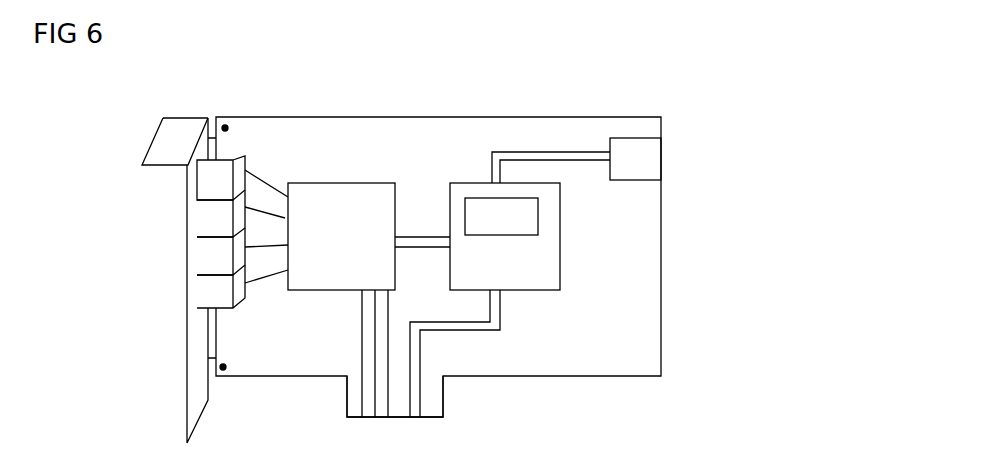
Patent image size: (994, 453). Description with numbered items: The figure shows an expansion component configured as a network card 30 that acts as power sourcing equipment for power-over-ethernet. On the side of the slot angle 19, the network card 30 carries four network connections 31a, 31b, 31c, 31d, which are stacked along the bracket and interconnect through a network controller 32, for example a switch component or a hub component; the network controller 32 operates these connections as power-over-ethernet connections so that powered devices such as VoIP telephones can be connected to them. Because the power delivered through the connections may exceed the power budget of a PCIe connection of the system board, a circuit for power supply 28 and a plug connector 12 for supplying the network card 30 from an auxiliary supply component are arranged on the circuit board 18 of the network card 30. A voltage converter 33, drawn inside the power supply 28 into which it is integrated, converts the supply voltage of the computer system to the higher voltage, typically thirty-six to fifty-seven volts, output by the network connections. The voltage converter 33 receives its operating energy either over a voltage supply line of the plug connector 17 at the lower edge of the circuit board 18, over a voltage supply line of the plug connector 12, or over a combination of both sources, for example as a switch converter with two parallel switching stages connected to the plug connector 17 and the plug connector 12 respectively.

The network card 30 is at (737, 72).
The circuit board 18 is at (622, 365).
The slot angle 19 is at (172, 132).
The network connection 31a is at (230, 155).
The network connection 31b is at (200, 218).
The network connection 31c is at (200, 258).
The network connection 31d is at (200, 292).
The network controller 32 is at (369, 300).
The power supply 28 is at (560, 283).
The voltage converter 33 is at (501, 216).
The plug connector 12 is at (630, 180).
The plug connector 17 is at (432, 405).